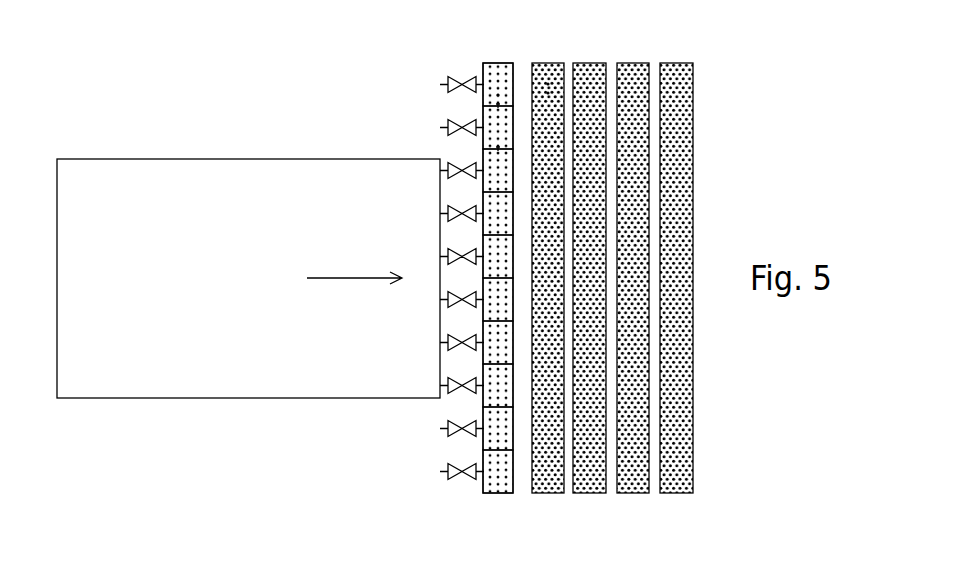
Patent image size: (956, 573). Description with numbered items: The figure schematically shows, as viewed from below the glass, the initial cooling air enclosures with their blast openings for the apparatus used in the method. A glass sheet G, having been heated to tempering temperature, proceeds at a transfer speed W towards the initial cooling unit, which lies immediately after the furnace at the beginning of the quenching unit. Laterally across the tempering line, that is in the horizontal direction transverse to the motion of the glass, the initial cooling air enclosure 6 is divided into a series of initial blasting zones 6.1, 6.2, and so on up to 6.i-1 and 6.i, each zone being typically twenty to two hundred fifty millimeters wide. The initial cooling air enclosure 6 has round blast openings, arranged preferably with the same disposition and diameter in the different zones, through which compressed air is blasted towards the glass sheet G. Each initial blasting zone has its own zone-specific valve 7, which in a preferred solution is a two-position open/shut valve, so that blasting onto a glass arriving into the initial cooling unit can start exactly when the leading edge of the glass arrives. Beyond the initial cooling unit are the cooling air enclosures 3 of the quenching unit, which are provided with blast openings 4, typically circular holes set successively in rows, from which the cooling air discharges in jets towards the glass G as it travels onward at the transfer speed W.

The cooling air enclosures 3 is at (579, 63).
The blast openings 4 is at (548, 93).
The initial cooling air enclosure 6 is at (456, 298).
The initial blasting zone 6.1 is at (483, 98).
The initial blasting zone 6.2 is at (483, 138).
The initial blasting zone 6.i-1 is at (483, 436).
The initial blasting zone 6.i is at (483, 490).
The zone-specific valves 7 is at (456, 72).
The glass sheet G is at (278, 159).
The transfer speed W is at (354, 264).